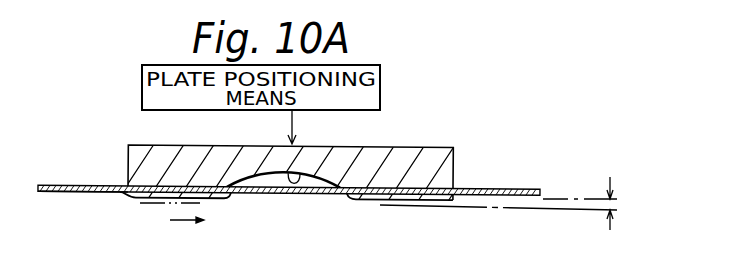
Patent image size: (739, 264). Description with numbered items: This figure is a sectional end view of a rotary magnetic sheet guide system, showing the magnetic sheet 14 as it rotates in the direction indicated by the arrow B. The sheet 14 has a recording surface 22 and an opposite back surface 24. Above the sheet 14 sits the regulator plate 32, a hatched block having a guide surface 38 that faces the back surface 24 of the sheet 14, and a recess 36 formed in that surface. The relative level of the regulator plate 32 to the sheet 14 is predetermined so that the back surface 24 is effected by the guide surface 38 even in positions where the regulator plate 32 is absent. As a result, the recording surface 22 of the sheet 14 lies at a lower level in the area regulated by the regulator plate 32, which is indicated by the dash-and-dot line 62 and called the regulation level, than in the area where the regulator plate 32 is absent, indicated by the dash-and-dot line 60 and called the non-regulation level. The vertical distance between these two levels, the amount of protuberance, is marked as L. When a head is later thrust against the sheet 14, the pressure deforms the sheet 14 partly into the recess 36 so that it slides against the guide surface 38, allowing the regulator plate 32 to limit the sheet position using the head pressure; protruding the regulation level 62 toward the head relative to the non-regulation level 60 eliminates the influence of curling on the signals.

The magnetic sheet 14 is at (72, 194).
The recording surface 22 is at (141, 205).
The back surface 24 is at (58, 184).
The regulator plate 32 is at (422, 146).
The recess 36 is at (299, 172).
The guide surface 38 is at (378, 198).
The non-regulation level 60 is at (563, 197).
The regulation level 62 is at (537, 211).
The direction of rotation B is at (186, 222).
The amount of protuberance L is at (620, 203).